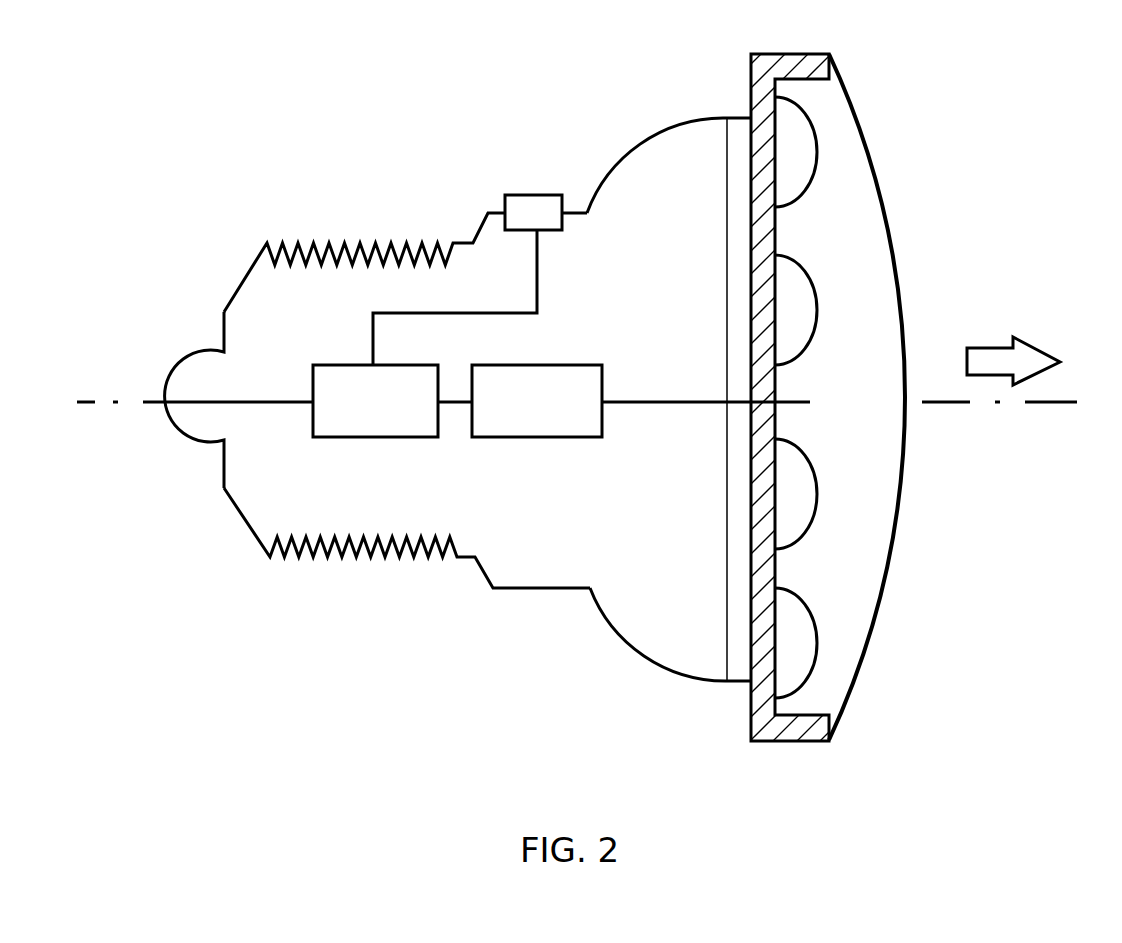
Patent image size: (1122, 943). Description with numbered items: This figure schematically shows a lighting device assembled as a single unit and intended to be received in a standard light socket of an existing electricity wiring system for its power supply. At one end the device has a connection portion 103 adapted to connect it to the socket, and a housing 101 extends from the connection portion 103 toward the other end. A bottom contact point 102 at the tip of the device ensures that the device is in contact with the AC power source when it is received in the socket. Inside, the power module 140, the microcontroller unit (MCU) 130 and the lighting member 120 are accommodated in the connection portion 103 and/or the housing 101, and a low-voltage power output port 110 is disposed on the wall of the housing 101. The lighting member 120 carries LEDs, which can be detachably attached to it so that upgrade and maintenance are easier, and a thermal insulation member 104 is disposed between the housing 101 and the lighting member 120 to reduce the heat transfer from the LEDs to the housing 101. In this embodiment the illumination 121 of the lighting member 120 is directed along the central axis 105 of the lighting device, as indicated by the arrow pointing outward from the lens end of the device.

The housing 101 is at (528, 545).
The bottom contact point 102 is at (203, 420).
The connection portion 103 is at (387, 245).
The thermal insulation member 104 is at (735, 572).
The central axis 105 is at (685, 400).
The low-voltage power output port 110 is at (530, 195).
The lighting member 120 is at (805, 625).
The illumination 121 is at (1040, 361).
The microcontroller unit (MCU) 130 is at (507, 365).
The power module 140 is at (350, 365).